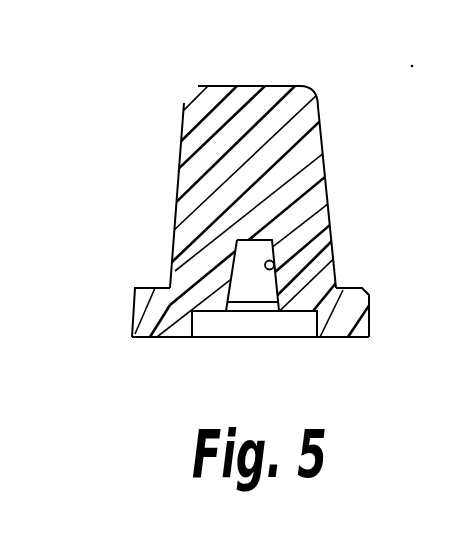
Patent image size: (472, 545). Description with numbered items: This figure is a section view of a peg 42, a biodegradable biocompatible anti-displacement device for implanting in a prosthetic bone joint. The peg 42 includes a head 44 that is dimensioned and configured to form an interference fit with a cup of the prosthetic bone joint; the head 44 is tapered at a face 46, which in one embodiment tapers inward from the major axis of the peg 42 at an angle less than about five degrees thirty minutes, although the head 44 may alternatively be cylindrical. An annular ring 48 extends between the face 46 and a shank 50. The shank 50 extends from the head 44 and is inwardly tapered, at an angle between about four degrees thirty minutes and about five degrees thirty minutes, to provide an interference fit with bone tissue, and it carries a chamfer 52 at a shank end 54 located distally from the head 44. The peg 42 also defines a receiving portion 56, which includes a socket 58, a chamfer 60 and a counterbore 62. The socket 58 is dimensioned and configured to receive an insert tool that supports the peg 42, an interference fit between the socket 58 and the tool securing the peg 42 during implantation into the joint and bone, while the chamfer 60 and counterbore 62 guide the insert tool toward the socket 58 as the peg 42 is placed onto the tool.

The peg 42 is at (116, 108).
The head 44 is at (148, 348).
The face 46 is at (372, 312).
The annular ring 48 is at (152, 288).
The shank 50 is at (341, 160).
The chamfer 52 is at (308, 92).
The shank end 54 is at (252, 85).
The receiving portion 56 is at (283, 328).
The socket 58 is at (277, 273).
The chamfer 60 is at (232, 312).
The counterbore 62 is at (208, 313).